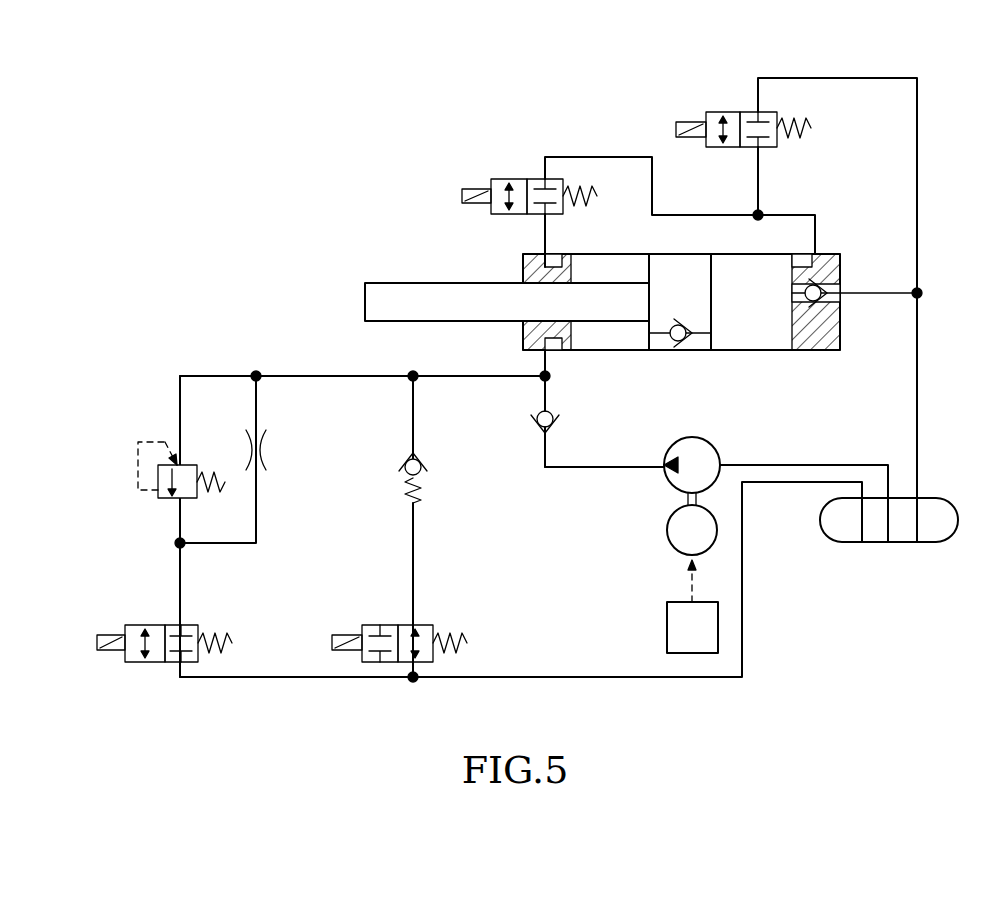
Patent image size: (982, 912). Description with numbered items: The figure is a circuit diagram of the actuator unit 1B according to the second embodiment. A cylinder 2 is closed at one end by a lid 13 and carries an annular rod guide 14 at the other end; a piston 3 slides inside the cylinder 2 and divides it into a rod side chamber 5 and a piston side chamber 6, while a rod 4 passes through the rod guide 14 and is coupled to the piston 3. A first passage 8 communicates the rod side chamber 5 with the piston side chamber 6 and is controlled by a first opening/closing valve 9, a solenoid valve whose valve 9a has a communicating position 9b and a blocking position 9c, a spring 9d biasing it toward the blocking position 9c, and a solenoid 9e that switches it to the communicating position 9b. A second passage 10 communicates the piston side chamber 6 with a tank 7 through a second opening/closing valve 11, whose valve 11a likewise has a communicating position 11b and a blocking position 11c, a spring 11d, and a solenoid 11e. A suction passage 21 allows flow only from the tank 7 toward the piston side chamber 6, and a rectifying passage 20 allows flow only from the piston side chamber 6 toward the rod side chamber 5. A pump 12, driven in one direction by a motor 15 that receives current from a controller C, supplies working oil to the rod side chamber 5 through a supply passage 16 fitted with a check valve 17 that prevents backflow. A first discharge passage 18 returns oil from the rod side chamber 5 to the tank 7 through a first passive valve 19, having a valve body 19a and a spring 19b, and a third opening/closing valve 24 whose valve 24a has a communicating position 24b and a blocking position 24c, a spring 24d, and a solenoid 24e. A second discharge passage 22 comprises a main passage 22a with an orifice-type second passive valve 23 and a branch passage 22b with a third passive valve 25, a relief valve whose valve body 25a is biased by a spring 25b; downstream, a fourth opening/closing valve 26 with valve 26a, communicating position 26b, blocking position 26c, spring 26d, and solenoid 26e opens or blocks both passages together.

The actuator unit 1B is at (408, 102).
The cylinder 2 is at (740, 352).
The piston 3 is at (663, 351).
The rod 4 is at (373, 284).
The rod side chamber 5 is at (600, 328).
The piston side chamber 6 is at (772, 317).
The tank 7 is at (930, 495).
The first passage 8 is at (578, 156).
The first opening/closing valve 9 is at (529, 200).
The valve 9a is at (489, 172).
The communicating position 9b is at (510, 178).
The blocking position 9c is at (553, 216).
The spring 9d is at (597, 194).
The solenoid 9e is at (463, 196).
The second passage 10 is at (918, 268).
The second opening/closing valve 11 is at (753, 125).
The valve 11a is at (712, 150).
The communicating position 11b is at (735, 112).
The blocking position 11c is at (768, 150).
The spring 11d is at (808, 117).
The solenoid 11e is at (680, 120).
The pump 12 is at (712, 440).
The lid 13 is at (841, 340).
The rod guide 14 is at (522, 340).
The motor 15 is at (667, 530).
The supply passage 16 is at (548, 398).
The check valve 17 is at (553, 430).
The first discharge passage 18 is at (413, 545).
The first passive valve 19 is at (394, 462).
The valve body 19a is at (403, 466).
The spring 19b is at (407, 490).
The rectifying passage 20 is at (700, 342).
The suction passage 21 is at (836, 288).
The second discharge passage 22 is at (223, 680).
The main passage 22a is at (180, 410).
The branch passage 22b is at (256, 523).
The second passive valve 23 is at (270, 450).
The third opening/closing valve 24 is at (392, 658).
The valve 24a is at (368, 618).
The communicating position 24b is at (430, 625).
The blocking position 24c is at (383, 625).
The spring 24d is at (460, 640).
The solenoid 24e is at (332, 645).
The third passive valve 25 is at (156, 498).
The valve body 25a is at (158, 490).
The spring 25b is at (205, 476).
The fourth opening/closing valve 26 is at (150, 656).
The valve 26a is at (131, 617).
The communicating position 26b is at (148, 625).
The blocking position 26c is at (186, 625).
The spring 26d is at (222, 640).
The solenoid 26e is at (97, 643).
The controller C is at (665, 623).